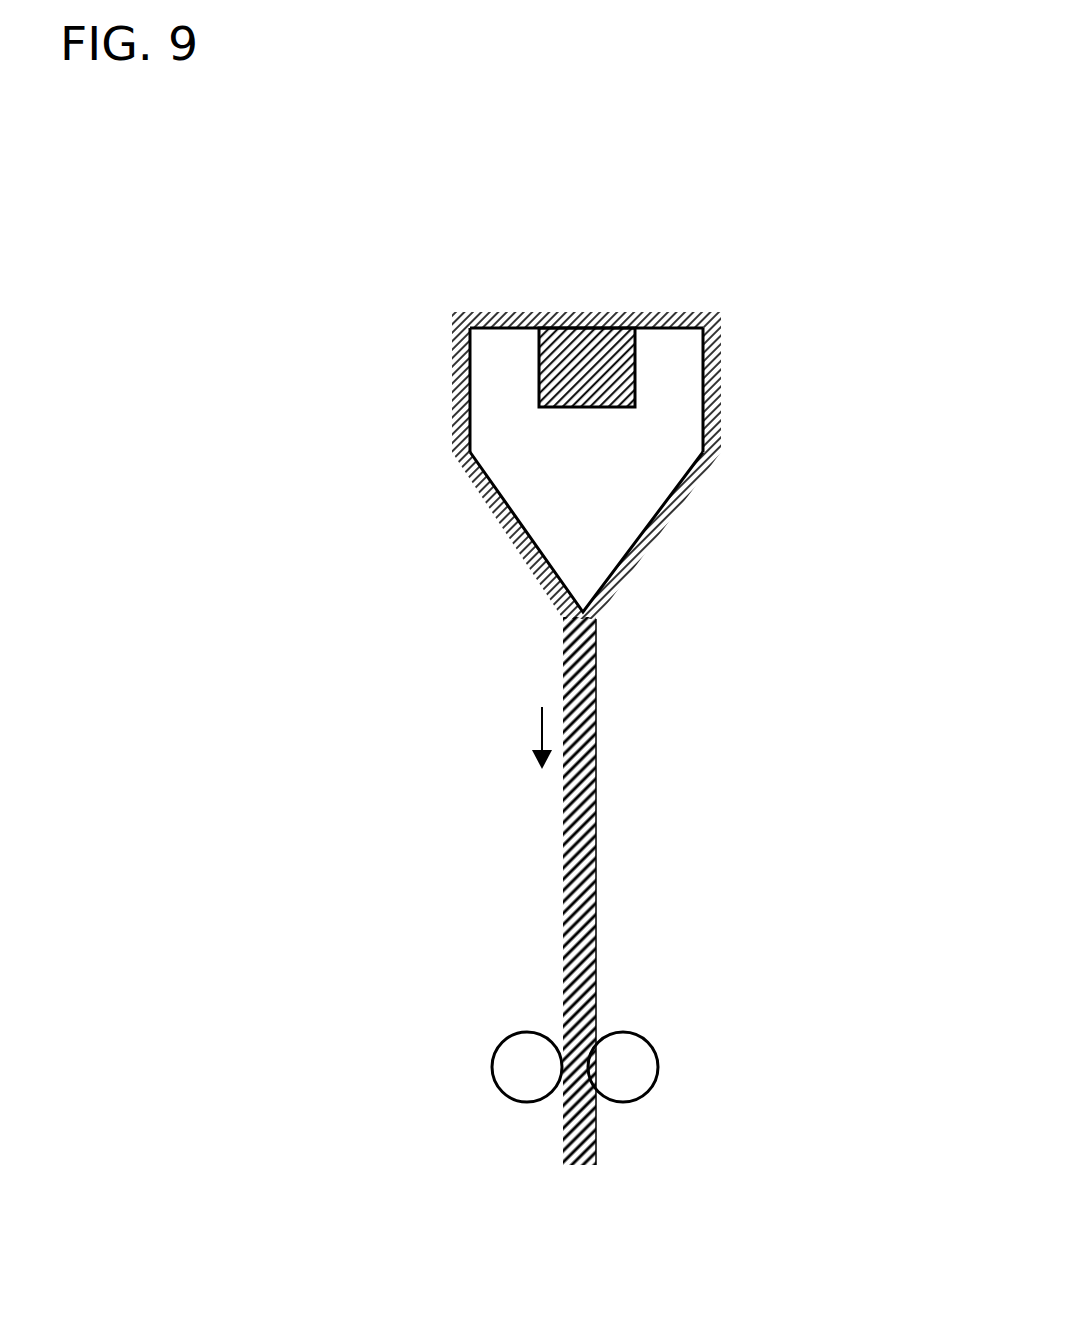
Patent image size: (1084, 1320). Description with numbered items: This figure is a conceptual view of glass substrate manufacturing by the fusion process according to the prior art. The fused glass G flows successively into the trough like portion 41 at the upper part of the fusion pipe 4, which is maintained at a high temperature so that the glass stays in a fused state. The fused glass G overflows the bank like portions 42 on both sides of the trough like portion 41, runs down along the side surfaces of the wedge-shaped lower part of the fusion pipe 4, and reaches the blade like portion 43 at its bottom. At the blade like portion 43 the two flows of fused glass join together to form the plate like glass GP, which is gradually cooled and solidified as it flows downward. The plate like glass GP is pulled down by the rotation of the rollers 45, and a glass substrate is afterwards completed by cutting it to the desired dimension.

The fusion pipe 4 is at (302, 313).
The trough like portion 41 is at (637, 379).
The bank like portions 42 is at (507, 328).
The blade like portion 43 is at (590, 603).
The fused glass G is at (593, 353).
The plate like glass GP is at (598, 697).
The rollers 45 is at (647, 1068).